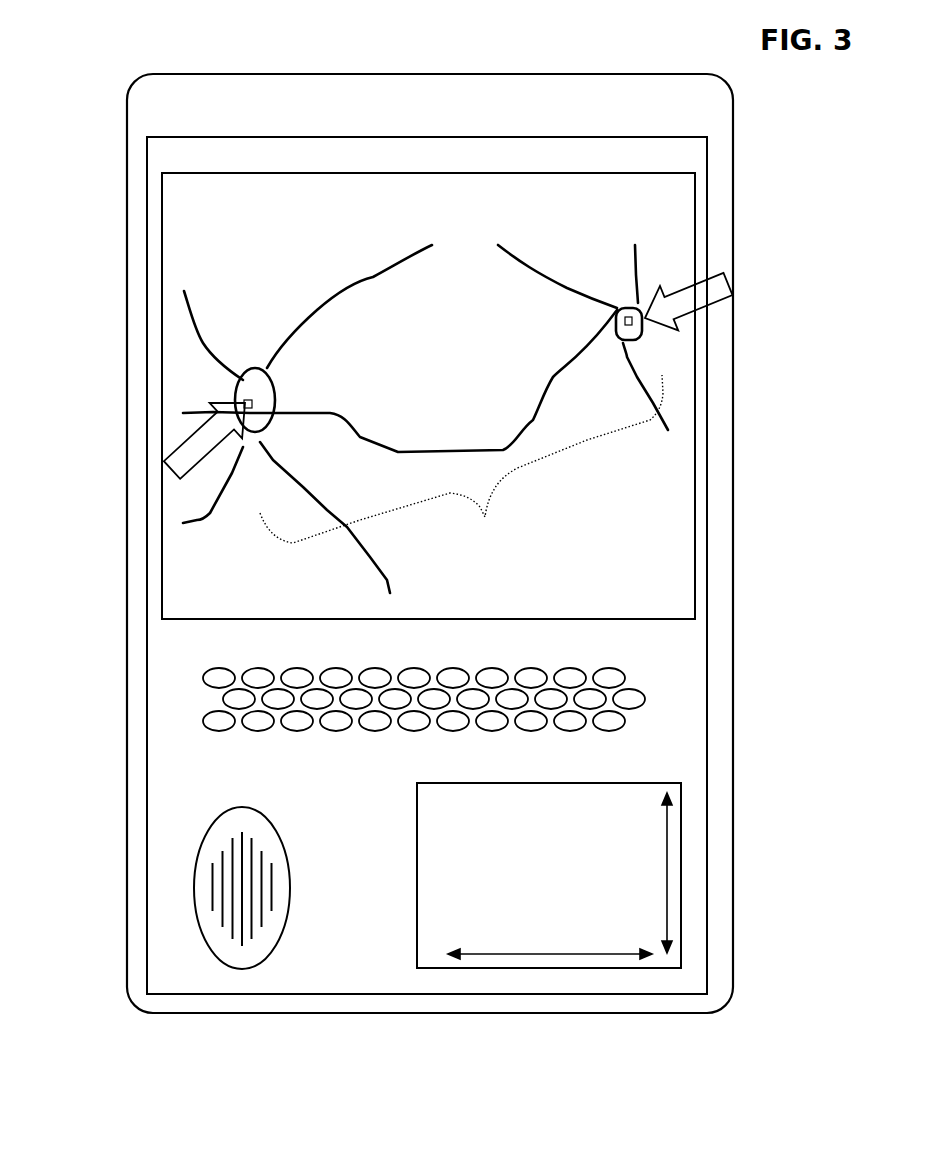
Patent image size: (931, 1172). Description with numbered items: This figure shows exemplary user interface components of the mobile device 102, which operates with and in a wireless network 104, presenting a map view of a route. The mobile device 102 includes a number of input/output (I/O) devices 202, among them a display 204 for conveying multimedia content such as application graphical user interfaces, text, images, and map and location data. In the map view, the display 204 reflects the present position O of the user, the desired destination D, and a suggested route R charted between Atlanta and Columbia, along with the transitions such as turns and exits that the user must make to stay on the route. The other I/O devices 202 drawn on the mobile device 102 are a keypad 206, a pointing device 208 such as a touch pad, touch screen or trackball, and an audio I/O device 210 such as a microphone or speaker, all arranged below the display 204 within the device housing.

The mobile device 102 is at (430, 543).
The wireless network 104 is at (110, 1022).
The input/output (I/O) devices 202 is at (440, 565).
The display 204 is at (447, 396).
The keypad 206 is at (403, 684).
The pointing device 208 is at (549, 875).
The audio I/O device 210 is at (226, 888).